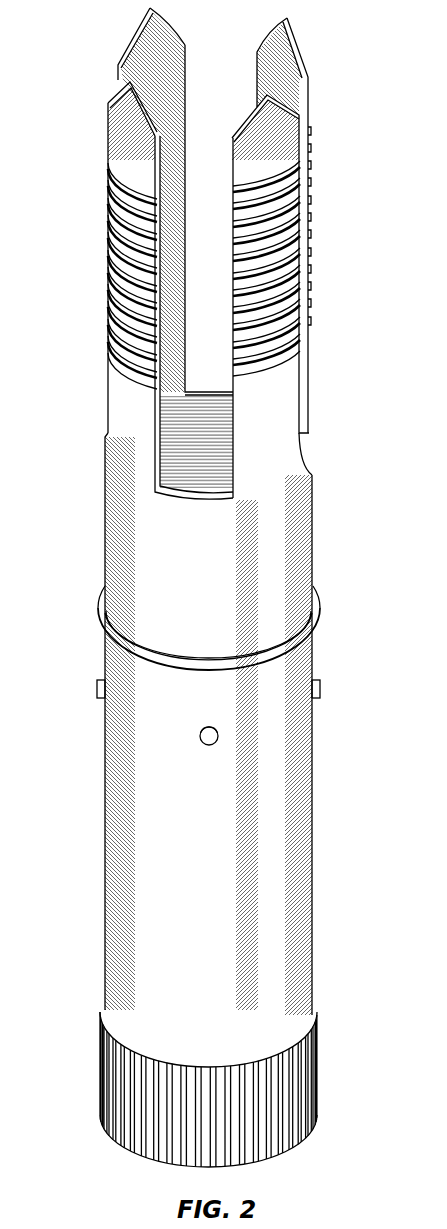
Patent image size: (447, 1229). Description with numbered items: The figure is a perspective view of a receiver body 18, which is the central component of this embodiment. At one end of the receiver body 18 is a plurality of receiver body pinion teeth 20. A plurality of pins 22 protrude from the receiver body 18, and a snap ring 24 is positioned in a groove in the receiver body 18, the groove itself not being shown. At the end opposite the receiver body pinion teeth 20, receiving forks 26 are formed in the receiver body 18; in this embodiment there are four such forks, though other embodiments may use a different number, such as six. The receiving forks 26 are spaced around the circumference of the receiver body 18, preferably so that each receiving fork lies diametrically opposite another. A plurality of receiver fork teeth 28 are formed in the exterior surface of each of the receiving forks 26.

The receiver body 18 is at (313, 513).
The receiver body pinion teeth 20 is at (122, 1085).
The pins 22 is at (98, 685).
The snap ring 24 is at (320, 607).
The receiving forks 26 is at (303, 55).
The receiver fork teeth 28 is at (305, 213).